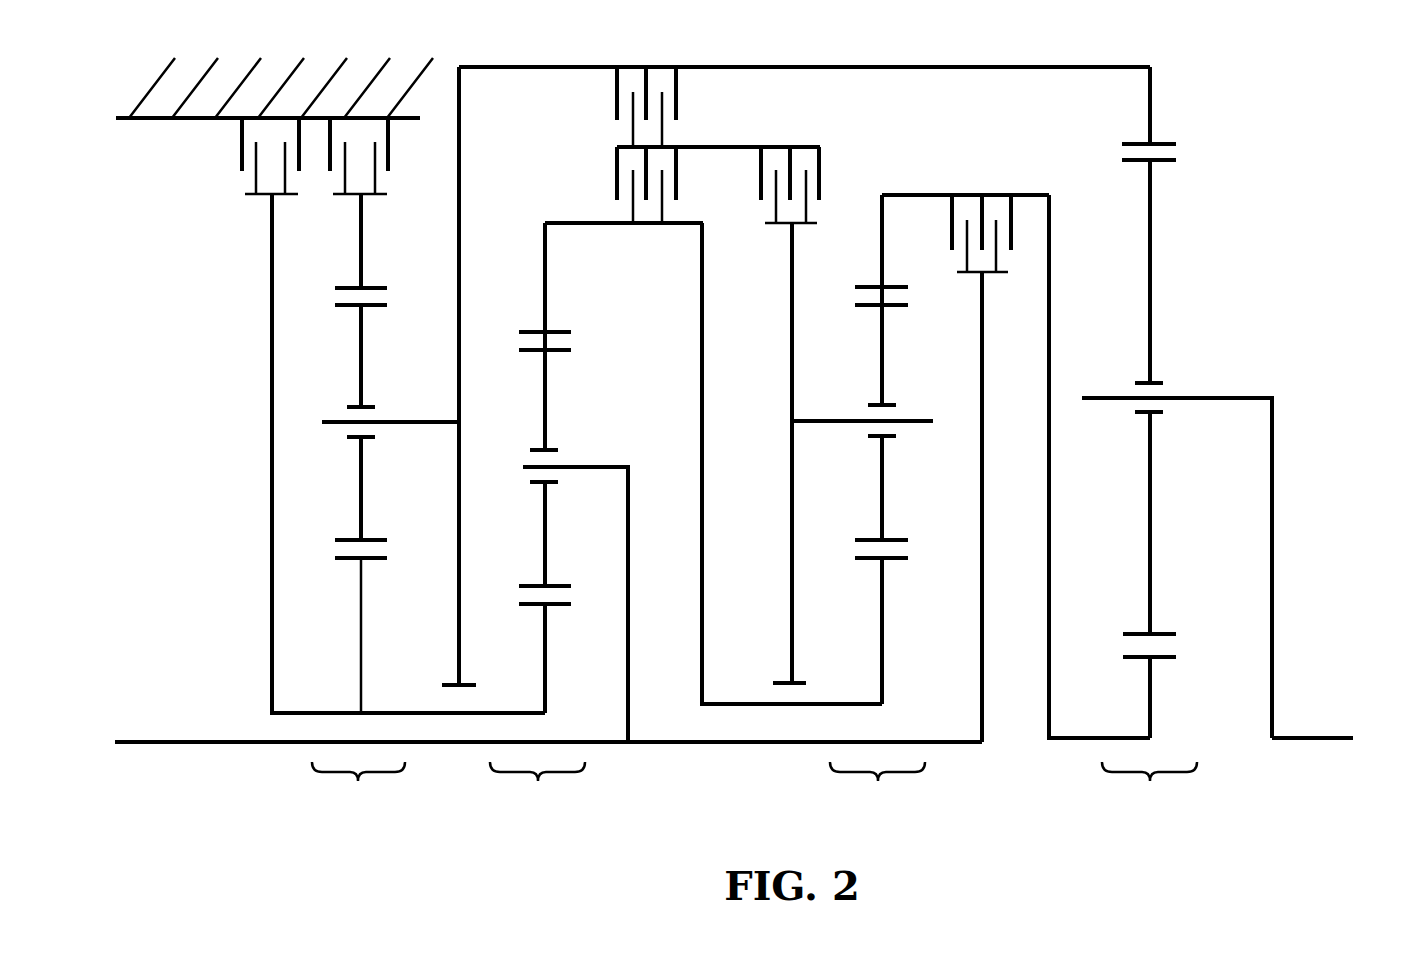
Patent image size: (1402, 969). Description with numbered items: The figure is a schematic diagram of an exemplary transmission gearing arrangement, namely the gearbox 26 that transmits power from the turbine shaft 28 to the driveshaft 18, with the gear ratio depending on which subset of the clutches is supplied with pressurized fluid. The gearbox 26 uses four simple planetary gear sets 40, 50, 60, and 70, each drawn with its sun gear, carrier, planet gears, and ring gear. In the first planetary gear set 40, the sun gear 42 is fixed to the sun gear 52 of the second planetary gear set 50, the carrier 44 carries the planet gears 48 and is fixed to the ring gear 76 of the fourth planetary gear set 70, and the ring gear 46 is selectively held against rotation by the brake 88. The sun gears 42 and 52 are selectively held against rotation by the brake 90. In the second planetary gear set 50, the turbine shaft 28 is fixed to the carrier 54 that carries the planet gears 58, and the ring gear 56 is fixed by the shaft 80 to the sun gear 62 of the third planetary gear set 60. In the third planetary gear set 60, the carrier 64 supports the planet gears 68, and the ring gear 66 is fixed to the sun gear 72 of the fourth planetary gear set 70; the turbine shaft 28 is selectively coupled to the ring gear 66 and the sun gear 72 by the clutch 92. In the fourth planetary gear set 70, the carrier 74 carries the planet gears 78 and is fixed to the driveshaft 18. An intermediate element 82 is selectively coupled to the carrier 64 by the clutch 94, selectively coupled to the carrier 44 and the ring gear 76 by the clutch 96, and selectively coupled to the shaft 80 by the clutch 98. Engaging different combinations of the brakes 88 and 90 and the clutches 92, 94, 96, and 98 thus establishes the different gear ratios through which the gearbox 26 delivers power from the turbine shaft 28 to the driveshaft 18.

The driveshaft 18 is at (1297, 738).
The gearbox 26 is at (782, 762).
The turbine shaft 28 is at (248, 743).
The planetary gear set 40 is at (358, 787).
The sun gear 42 is at (361, 656).
The carrier 44 is at (459, 172).
The ring gear 46 is at (361, 270).
The first planet gears 48 is at (361, 382).
The planetary gear set 50 is at (537, 787).
The sun gear 52 is at (545, 672).
The carrier 54 is at (628, 612).
The ring gear 56 is at (545, 292).
The second planet gears 58 is at (545, 425).
The planetary gear set 60 is at (877, 788).
The sun gear 62 is at (882, 642).
The carrier 64 is at (792, 330).
The ring gear 66 is at (882, 220).
The third planet gears 68 is at (882, 378).
The planetary gear set 70 is at (1149, 788).
The sun gear 72 is at (1150, 718).
The carrier 74 is at (1185, 398).
The ring gear 76 is at (1150, 130).
The fourth planet gears 78 is at (1150, 272).
The shaft 80 is at (702, 422).
The intermediate element 82 is at (692, 147).
The brake 88 is at (388, 147).
The brake 90 is at (242, 145).
The clutch 92 is at (990, 195).
The clutch 94 is at (773, 147).
The clutch 96 is at (617, 83).
The clutch 98 is at (617, 158).